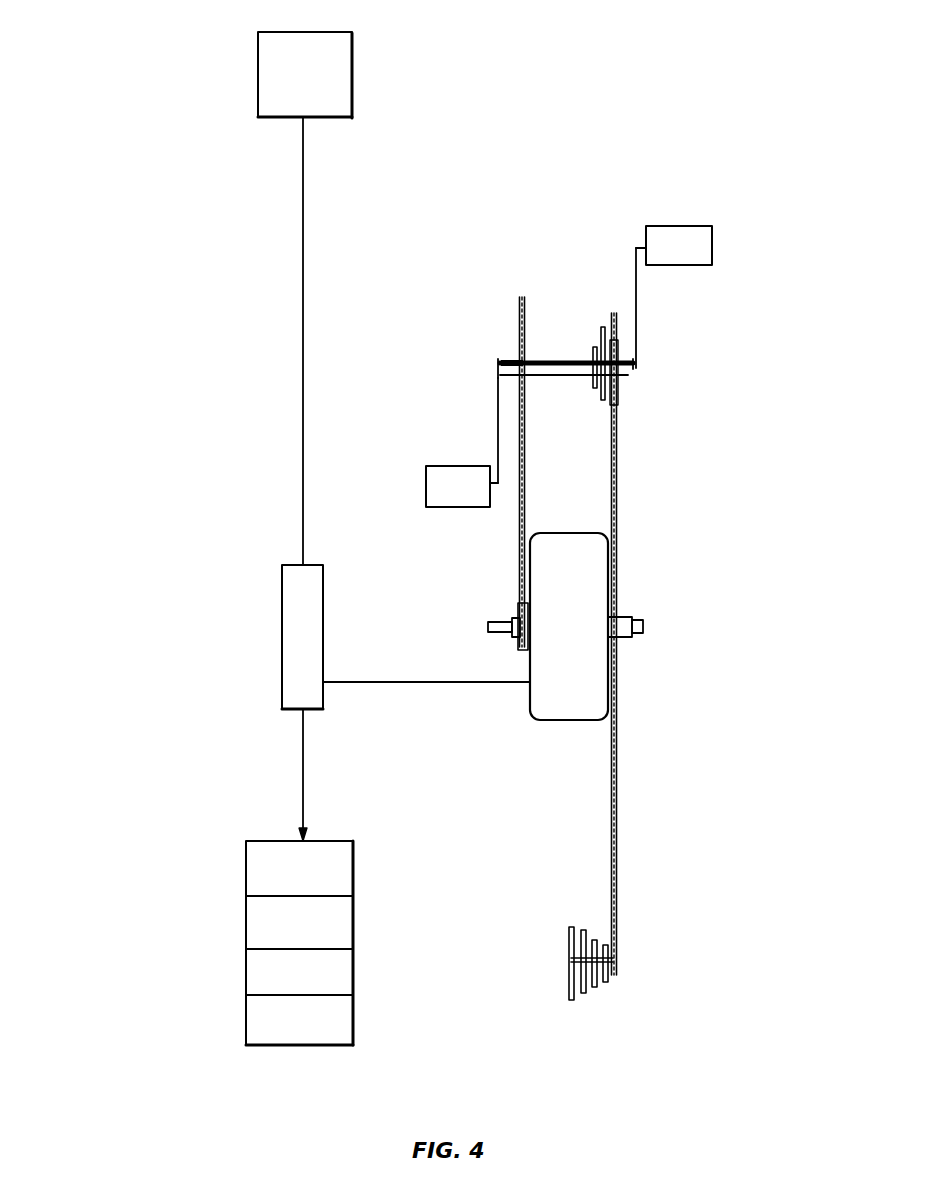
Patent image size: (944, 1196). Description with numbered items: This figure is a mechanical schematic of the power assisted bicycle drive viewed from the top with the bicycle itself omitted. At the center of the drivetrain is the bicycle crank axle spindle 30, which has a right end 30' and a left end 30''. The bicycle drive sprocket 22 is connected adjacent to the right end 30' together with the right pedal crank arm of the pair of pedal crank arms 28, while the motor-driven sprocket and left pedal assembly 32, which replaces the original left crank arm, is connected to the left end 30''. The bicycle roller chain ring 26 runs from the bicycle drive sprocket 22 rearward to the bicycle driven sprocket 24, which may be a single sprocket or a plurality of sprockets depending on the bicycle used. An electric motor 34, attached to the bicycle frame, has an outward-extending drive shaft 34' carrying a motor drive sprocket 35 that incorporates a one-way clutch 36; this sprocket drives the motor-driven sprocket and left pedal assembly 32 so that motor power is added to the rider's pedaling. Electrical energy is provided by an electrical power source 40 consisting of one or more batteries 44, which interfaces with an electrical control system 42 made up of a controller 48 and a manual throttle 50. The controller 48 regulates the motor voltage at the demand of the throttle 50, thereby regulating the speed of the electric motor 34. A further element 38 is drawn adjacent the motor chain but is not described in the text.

The bicycle drive sprocket 22 is at (617, 405).
The bicycle driven sprocket 24 is at (580, 995).
The bicycle roller chain ring 26 is at (616, 875).
The pedal crank arms 28 is at (635, 316).
The bicycle crank axle spindle 30 is at (565, 309).
The right end 30' is at (686, 363).
The left end 30'' is at (453, 346).
The motor-driven sprocket and left pedal assembly 32 is at (521, 311).
The electric motor 34 is at (660, 626).
The drive shaft 34' is at (476, 610).
The motor drive sprocket 35 is at (442, 639).
The one-way clutch 36 is at (518, 637).
The chain tensioner 38 is at (521, 503).
The electrical power source 40 is at (265, 943).
The electrical control system 42 is at (260, 531).
The batteries 44 is at (353, 909).
The controller 48 is at (282, 682).
The manual throttle 50 is at (352, 80).